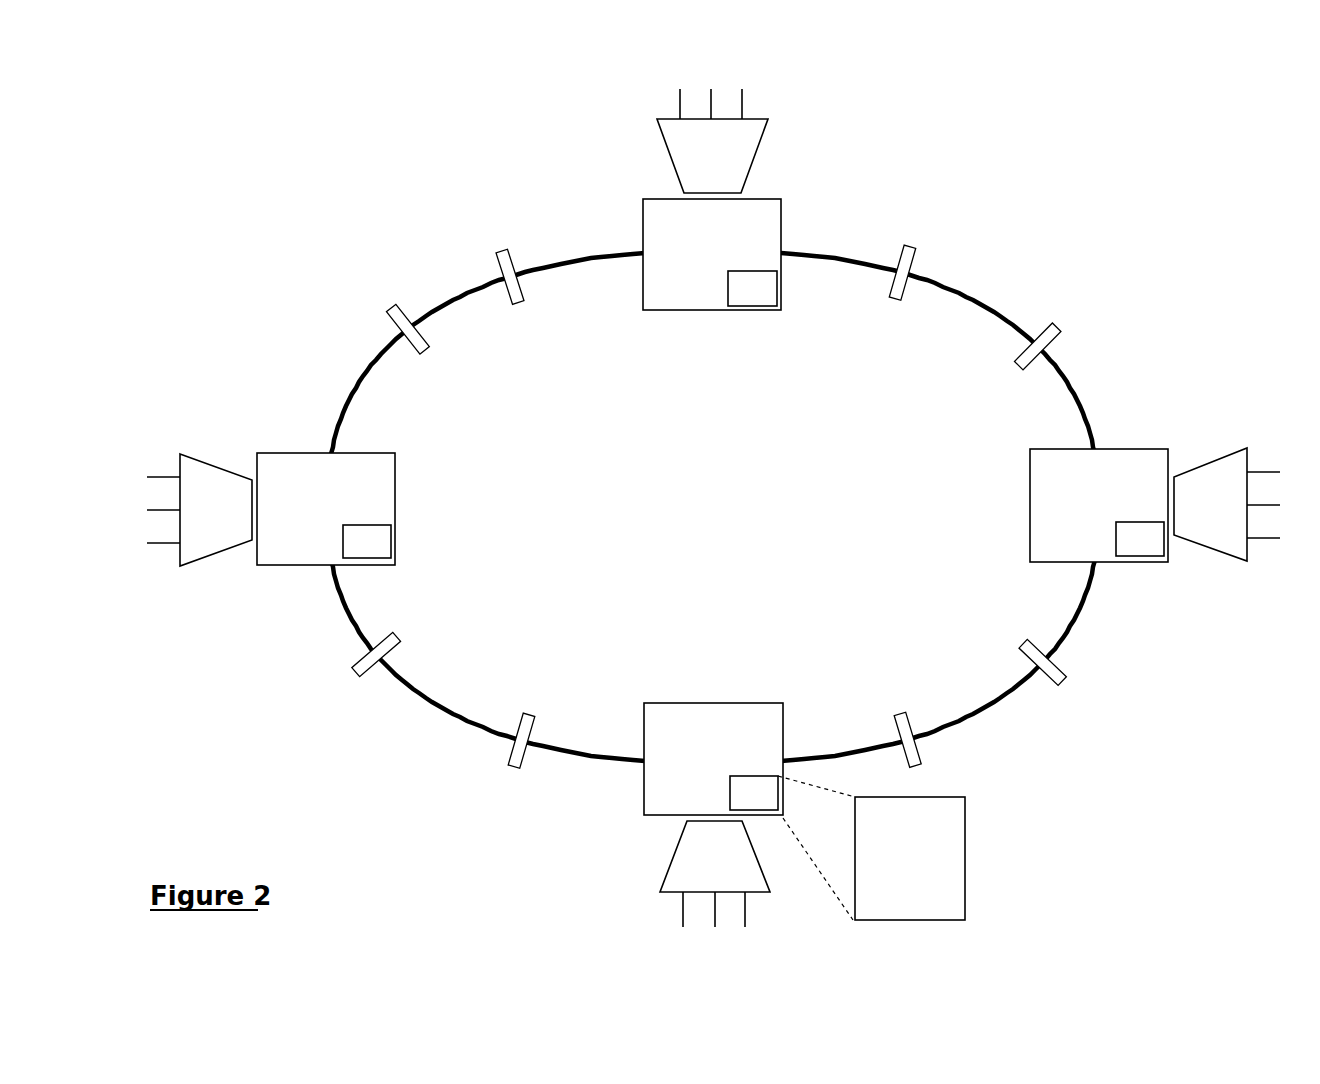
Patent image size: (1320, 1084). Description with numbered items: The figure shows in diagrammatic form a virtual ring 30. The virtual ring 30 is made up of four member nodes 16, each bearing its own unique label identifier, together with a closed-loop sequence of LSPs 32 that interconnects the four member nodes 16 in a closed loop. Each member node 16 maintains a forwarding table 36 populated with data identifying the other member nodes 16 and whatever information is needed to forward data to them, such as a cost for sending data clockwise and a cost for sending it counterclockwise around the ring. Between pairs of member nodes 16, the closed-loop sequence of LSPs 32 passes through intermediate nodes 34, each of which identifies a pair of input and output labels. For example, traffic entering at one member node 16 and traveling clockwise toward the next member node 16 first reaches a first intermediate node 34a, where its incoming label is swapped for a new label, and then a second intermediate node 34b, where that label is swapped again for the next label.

The virtual ring 30 is at (290, 112).
The closed-loop sequence of LSPs 32 is at (531, 404).
The member node 16 is at (780, 199).
The intermediate node 34 is at (912, 250).
The first intermediate node 34a is at (388, 306).
The second intermediate node 34b is at (506, 250).
The forwarding table 36 is at (765, 310).